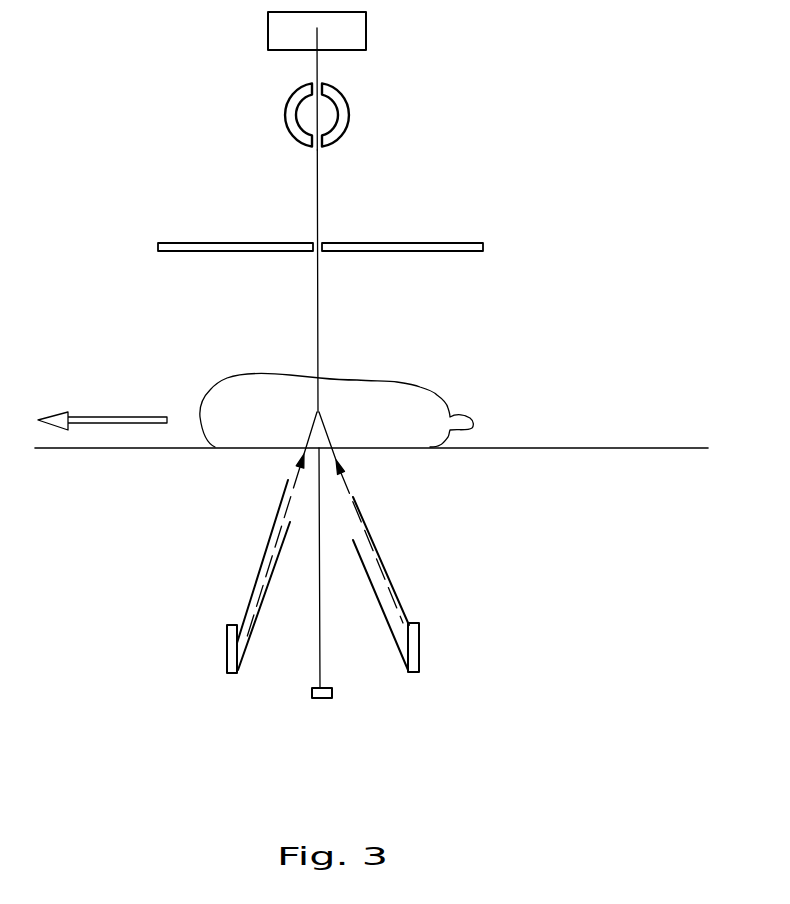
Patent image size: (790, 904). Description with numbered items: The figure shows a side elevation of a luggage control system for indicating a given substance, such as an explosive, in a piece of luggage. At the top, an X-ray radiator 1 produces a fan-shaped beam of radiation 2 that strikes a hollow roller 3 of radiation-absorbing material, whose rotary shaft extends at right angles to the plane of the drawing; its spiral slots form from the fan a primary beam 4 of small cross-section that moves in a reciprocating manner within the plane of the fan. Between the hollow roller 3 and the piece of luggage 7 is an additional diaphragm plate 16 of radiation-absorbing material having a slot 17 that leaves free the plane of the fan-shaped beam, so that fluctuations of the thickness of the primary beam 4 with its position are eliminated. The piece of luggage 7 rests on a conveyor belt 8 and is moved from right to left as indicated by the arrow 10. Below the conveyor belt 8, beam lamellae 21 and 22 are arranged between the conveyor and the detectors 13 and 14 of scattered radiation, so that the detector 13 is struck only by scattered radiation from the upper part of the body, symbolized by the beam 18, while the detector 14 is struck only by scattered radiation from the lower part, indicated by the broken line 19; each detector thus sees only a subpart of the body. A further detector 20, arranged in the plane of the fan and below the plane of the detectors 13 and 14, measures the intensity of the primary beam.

The X-ray radiator 1 is at (360, 33).
The fan-shaped beam of radiation 2 is at (318, 68).
The hollow roller 3 is at (350, 120).
The primary beam 4 is at (318, 212).
The piece of luggage 7 is at (432, 394).
The conveyor belt 8 is at (628, 447).
The arrow 10 is at (123, 418).
The detector 13 is at (227, 652).
The detector 14 is at (420, 657).
The diaphragm plate 16 is at (232, 247).
The slot 17 is at (318, 253).
The beam 18 is at (298, 473).
The broken line 19 is at (345, 482).
The detector 20 is at (334, 692).
The beam lamella 21 is at (257, 563).
The beam lamella 22 is at (385, 615).